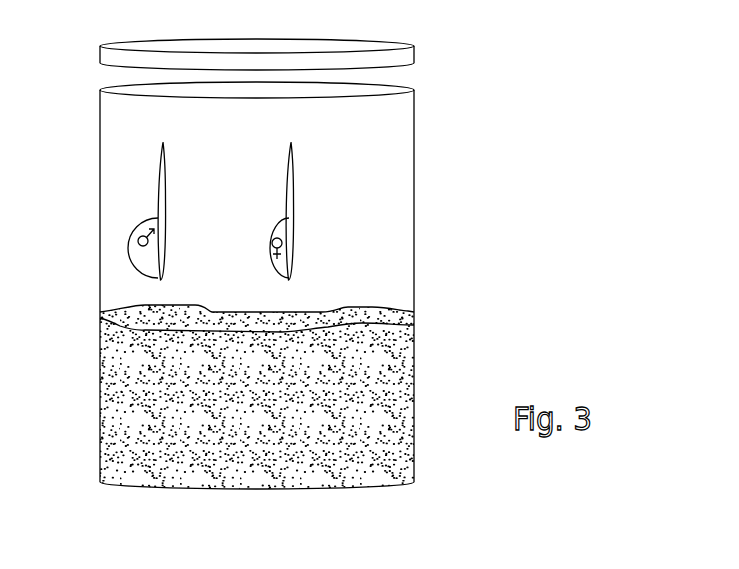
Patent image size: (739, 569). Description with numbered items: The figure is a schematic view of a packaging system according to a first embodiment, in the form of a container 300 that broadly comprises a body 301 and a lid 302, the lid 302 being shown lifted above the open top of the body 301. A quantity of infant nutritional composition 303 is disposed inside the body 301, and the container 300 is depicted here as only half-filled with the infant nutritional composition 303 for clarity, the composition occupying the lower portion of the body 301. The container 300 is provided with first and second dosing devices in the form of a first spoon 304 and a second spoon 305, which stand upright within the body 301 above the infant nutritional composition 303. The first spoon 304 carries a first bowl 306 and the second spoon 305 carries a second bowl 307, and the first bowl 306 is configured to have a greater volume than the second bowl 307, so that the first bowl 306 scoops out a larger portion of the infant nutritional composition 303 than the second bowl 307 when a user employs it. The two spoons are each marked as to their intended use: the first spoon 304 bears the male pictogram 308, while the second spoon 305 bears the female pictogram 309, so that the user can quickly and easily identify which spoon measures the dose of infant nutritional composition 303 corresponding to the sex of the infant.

The container 300 is at (327, 253).
The body 301 is at (415, 370).
The lid 302 is at (396, 43).
The infant nutritional composition 303 is at (387, 408).
The first spoon 304 is at (153, 185).
The second spoon 305 is at (302, 192).
The first bowl 306 is at (140, 263).
The second bowl 307 is at (273, 278).
The male pictogram 308 is at (138, 238).
The female pictogram 309 is at (283, 238).